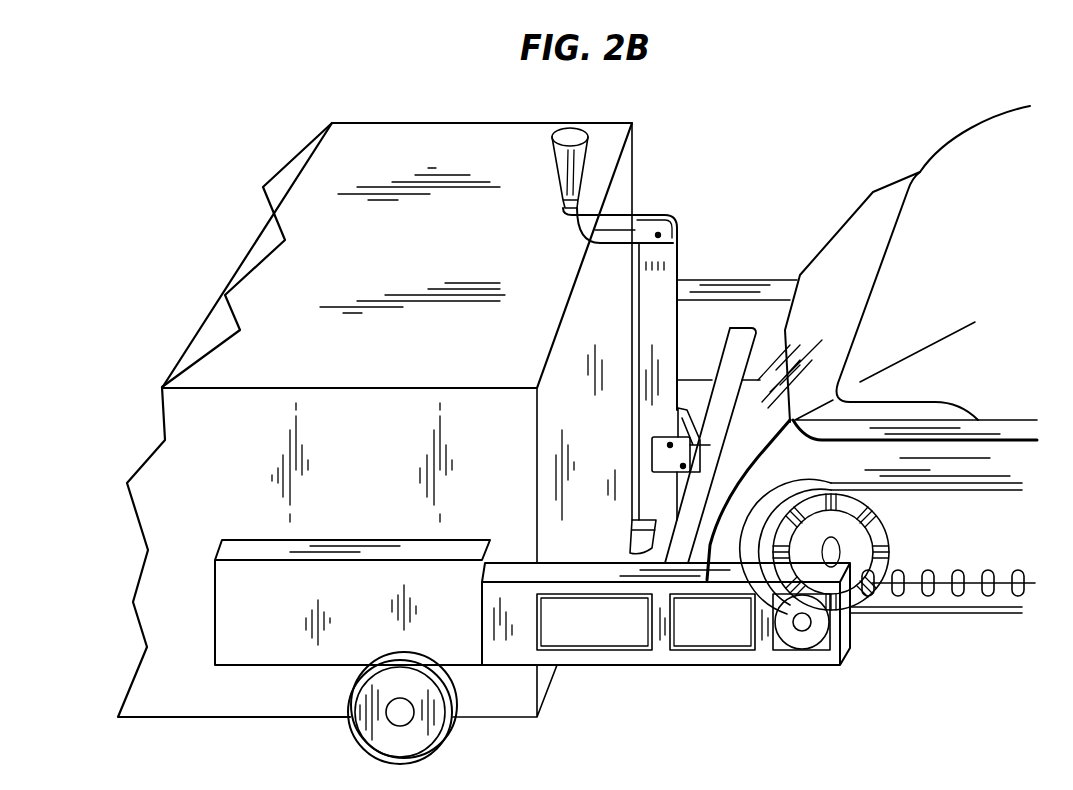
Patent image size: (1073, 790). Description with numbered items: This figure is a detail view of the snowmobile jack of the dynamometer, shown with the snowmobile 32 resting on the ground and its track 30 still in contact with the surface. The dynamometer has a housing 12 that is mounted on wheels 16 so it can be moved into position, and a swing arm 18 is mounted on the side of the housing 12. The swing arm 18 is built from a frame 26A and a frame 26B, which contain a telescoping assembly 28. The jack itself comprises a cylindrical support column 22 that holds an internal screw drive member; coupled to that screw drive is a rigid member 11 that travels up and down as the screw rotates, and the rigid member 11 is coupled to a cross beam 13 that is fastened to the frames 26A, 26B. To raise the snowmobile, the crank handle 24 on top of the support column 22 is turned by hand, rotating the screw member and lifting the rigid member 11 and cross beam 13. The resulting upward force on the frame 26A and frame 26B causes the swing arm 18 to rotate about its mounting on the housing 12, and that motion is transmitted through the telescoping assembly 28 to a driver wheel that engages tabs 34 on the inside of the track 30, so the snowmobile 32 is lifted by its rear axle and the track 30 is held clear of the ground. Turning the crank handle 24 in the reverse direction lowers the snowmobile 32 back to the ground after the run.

The rigid member 11 is at (653, 447).
The housing 12 is at (449, 272).
The cross beam 13 is at (677, 503).
The wheels 16 is at (440, 753).
The swing arm 18 is at (237, 670).
The cylindrical support column 22 is at (677, 247).
The crank handle 24 is at (552, 160).
The frame 26A is at (608, 667).
The frame 26B is at (753, 280).
The telescoping assembly 28 is at (800, 633).
The snowmobile track 30 is at (982, 617).
The snowmobile 32 is at (955, 271).
The tabs 34 is at (900, 590).